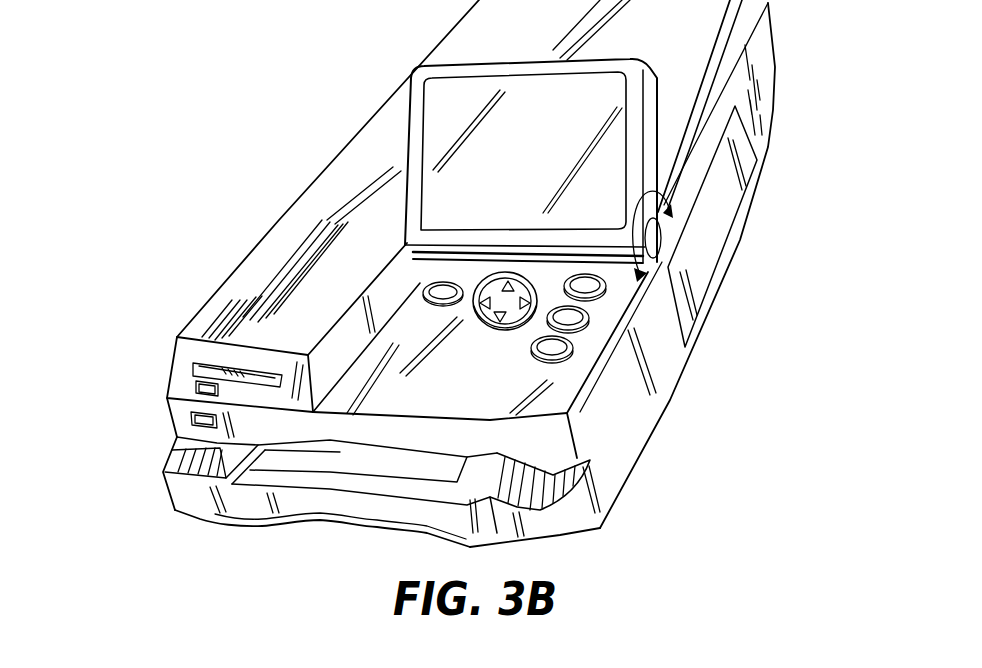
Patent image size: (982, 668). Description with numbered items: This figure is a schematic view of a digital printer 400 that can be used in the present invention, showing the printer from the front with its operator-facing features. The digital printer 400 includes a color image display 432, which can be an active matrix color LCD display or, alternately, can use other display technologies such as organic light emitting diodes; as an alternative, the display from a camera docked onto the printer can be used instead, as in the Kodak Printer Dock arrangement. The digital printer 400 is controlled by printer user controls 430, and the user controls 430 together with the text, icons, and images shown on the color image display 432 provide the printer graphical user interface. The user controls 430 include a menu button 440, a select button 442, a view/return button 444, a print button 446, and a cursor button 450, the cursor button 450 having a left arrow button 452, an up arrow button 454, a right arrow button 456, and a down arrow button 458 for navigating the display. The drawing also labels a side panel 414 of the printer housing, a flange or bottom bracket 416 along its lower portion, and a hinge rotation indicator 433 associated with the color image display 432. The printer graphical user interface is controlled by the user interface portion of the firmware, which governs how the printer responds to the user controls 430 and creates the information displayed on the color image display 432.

The digital printer 400 is at (471, 273).
The side panel 414 is at (717, 233).
The flange / bottom bracket 416 is at (326, 475).
The printer user controls 430 is at (500, 368).
The color image display 432 is at (445, 125).
The hinge rotation indicator 433 is at (655, 258).
The menu button 440 is at (424, 288).
The select button 442 is at (606, 292).
The view/return button 444 is at (589, 322).
The print button 446 is at (573, 352).
The cursor button 450 is at (523, 253).
The left arrow button 452 is at (487, 290).
The up arrow button 454 is at (504, 278).
The right arrow button 456 is at (527, 290).
The down arrow button 458 is at (493, 328).